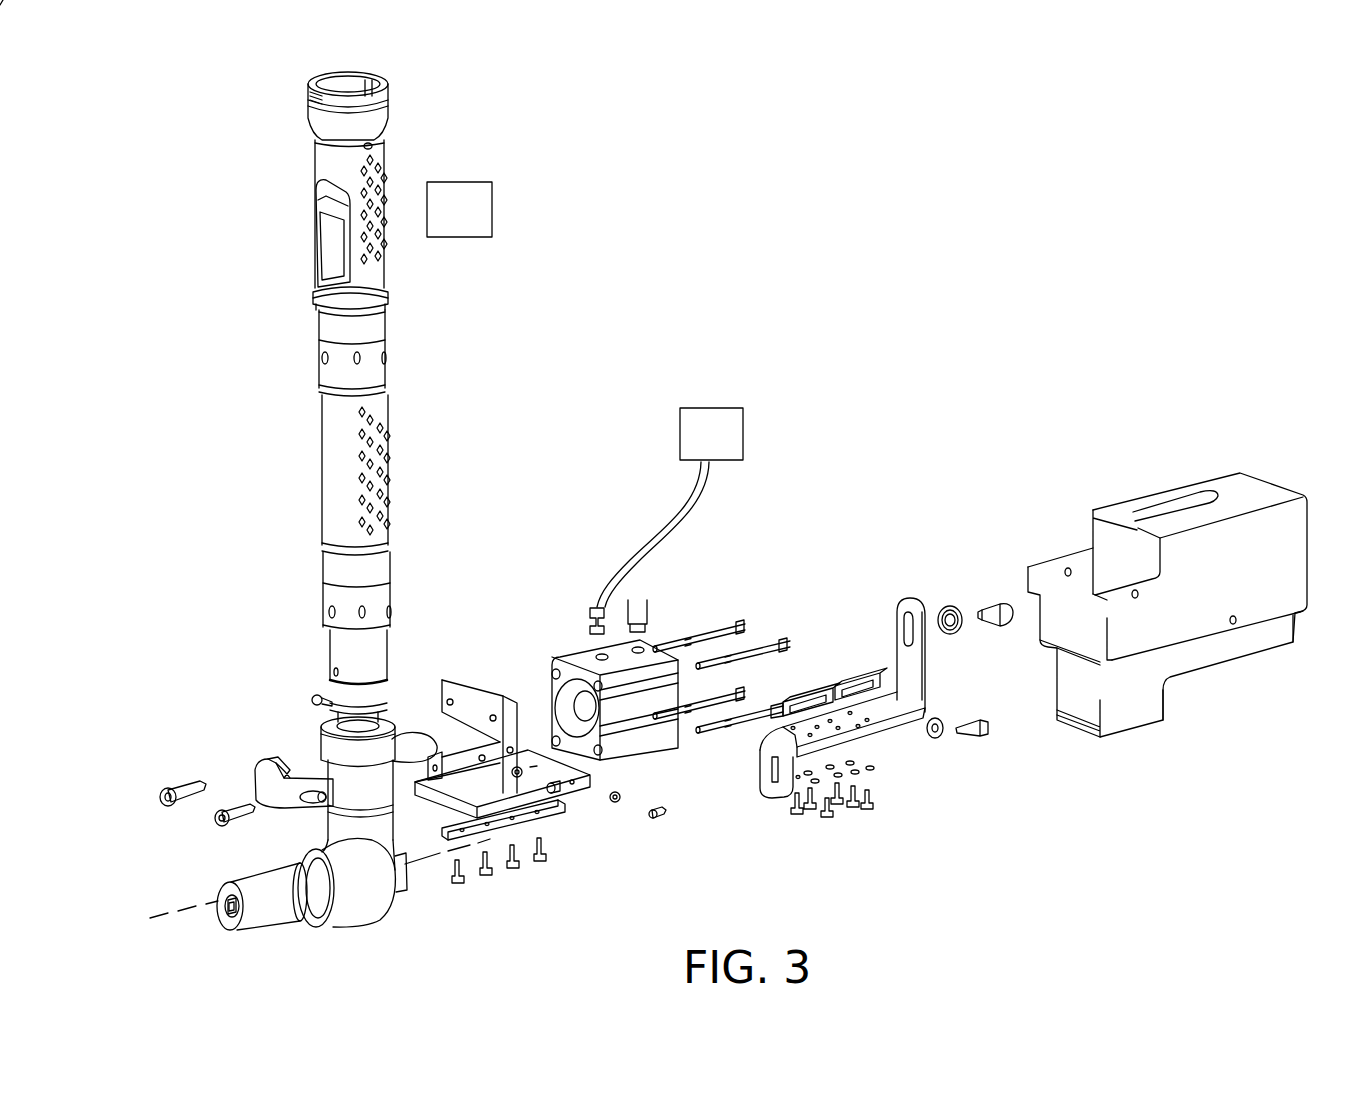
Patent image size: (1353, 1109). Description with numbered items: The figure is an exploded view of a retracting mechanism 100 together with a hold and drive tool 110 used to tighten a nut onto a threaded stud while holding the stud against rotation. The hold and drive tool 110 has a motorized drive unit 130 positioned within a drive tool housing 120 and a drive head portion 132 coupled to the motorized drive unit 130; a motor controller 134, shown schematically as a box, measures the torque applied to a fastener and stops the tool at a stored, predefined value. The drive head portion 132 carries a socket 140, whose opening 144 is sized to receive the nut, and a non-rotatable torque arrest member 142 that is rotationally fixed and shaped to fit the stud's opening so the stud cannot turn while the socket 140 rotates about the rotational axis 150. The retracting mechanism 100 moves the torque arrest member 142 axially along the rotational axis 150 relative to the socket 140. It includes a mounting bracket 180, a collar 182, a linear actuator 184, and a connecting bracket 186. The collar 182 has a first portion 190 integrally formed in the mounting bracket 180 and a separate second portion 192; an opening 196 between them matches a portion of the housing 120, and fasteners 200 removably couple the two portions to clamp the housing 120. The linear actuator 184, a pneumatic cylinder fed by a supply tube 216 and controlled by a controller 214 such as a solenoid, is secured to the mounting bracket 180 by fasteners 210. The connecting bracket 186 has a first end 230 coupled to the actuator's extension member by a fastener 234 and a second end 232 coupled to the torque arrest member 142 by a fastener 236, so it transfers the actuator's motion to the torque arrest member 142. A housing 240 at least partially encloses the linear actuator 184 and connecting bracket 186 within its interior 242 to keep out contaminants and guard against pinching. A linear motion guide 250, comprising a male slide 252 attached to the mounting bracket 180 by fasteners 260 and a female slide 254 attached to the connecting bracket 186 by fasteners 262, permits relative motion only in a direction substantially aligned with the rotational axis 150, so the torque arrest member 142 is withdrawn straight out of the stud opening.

The retracting mechanism 100 is at (786, 523).
The hold and drive tool 110 is at (195, 277).
The drive tool housing 120 is at (390, 647).
The motorized drive unit 130 is at (320, 520).
The drive head portion 132 is at (300, 940).
The motor controller 134 is at (458, 237).
The socket 140 is at (237, 882).
The non-rotatable torque arrest member 142 is at (220, 908).
The opening 144 is at (226, 916).
The rotational axis 150 is at (168, 925).
The mounting bracket 180 is at (480, 670).
The collar 182 is at (213, 762).
The linear actuator 184 is at (586, 656).
The connecting bracket 186 is at (897, 626).
The first portion 190 is at (407, 730).
The second portion 192 is at (290, 776).
The opening 196 is at (403, 790).
The fasteners 200 is at (215, 822).
The fasteners 210 is at (770, 693).
The controller 214 is at (743, 438).
The supply tube 216 is at (708, 498).
The first end 230 is at (840, 709).
The second end 232 is at (762, 785).
The fastener 234 is at (986, 628).
The fastener 236 is at (970, 735).
The housing 240 is at (1147, 497).
The interior 242 is at (1130, 555).
The linear motion guide 250 is at (554, 871).
The male slide 252 is at (565, 810).
The female slide 254 is at (820, 686).
The fasteners 260 is at (457, 885).
The fasteners 262 is at (797, 816).